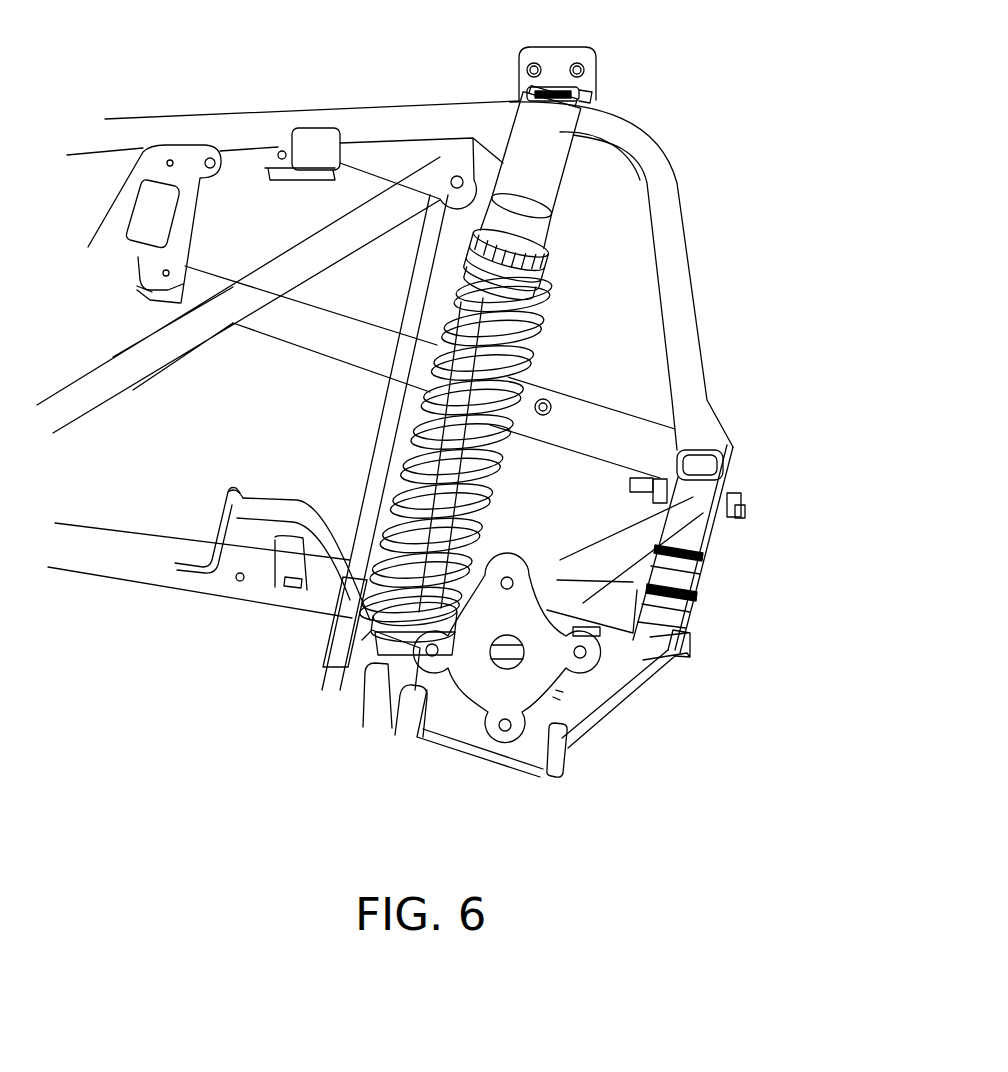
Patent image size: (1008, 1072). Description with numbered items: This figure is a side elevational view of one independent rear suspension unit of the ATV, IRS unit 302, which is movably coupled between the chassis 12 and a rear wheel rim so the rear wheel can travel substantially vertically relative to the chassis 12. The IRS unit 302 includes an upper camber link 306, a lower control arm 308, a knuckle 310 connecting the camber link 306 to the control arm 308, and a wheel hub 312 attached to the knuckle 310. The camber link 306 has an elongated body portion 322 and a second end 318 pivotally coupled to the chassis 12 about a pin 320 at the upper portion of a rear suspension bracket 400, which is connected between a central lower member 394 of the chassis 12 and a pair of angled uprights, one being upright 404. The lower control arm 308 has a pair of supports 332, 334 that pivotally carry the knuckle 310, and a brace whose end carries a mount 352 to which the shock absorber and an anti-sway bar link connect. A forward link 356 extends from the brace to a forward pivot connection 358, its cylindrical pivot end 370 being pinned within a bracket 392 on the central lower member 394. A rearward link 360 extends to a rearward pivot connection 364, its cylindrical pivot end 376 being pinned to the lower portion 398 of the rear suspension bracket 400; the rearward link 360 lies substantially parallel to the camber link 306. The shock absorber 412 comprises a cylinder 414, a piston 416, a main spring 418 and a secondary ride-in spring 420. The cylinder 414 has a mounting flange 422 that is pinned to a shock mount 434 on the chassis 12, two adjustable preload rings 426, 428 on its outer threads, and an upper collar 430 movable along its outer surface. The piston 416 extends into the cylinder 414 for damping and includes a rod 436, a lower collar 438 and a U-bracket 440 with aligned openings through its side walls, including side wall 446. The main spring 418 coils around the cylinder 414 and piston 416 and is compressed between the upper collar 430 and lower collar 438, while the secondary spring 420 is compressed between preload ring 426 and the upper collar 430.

The chassis 12 is at (240, 110).
The IRS unit 302 is at (724, 714).
The upper camber link 306 is at (657, 535).
The lower control arm 308 is at (598, 741).
The knuckle 310 is at (525, 760).
The wheel hub 312 is at (483, 702).
The second end 318 is at (702, 487).
The pin 320 is at (647, 477).
The elongated body portion 322 is at (624, 550).
The support 332 is at (403, 733).
The support 334 is at (555, 778).
The mount 352 is at (373, 716).
The forward link 356 is at (298, 597).
The forward pivot connection 358 is at (205, 519).
The rearward link 360 is at (612, 708).
The rearward pivot connection 364 is at (703, 618).
The cylindrical pivot end 370 is at (238, 492).
The cylindrical pivot end 376 is at (680, 627).
The bracket 392 is at (262, 498).
The central lower member 394 is at (113, 567).
The lower portion 398 is at (693, 603).
The rear suspension bracket 400 is at (714, 559).
The angled upright 404 is at (638, 137).
The shock absorber 412 is at (545, 338).
The cylinder 414 is at (425, 449).
The piston 416 is at (470, 444).
The main spring 418 is at (520, 368).
The secondary spring 420 is at (548, 278).
The mounting flange 422 is at (577, 100).
The adjustable preload ring 426 is at (548, 268).
The adjustable preload ring 428 is at (545, 262).
The upper collar 430 is at (470, 297).
The shock mount 434 is at (551, 77).
The rod 436 is at (443, 507).
The lower collar 438 is at (338, 637).
The U-bracket 440 is at (367, 645).
The side wall 446 is at (365, 648).